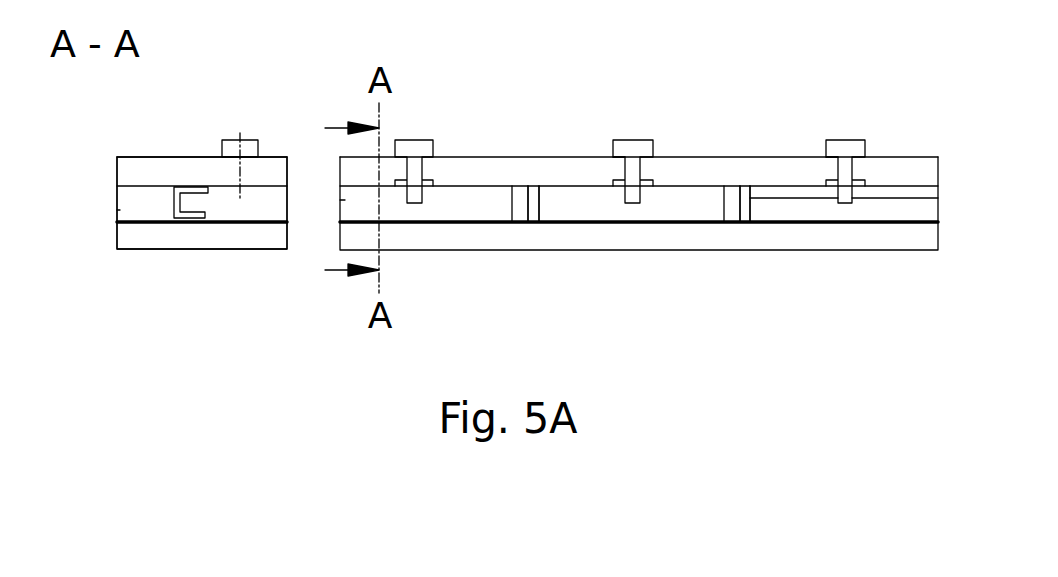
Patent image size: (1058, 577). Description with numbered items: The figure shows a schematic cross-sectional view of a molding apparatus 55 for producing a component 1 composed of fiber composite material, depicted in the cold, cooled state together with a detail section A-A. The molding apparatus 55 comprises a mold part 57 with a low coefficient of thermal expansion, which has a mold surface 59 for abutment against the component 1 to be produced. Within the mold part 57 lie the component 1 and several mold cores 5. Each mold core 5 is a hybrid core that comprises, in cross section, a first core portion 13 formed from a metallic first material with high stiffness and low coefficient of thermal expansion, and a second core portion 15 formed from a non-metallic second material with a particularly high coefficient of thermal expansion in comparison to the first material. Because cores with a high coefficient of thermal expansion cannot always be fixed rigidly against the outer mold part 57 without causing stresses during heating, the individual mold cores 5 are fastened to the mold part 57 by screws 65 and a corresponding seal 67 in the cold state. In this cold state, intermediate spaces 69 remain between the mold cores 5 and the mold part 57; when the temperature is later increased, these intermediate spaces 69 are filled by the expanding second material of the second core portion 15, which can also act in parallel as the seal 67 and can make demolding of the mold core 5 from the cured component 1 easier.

The component 1 is at (233, 217).
The mold core 5 is at (133, 193).
The first core portion 13 is at (148, 210).
The second core portion 15 is at (198, 220).
The molding apparatus 55 is at (502, 196).
The mold part 57 is at (152, 167).
The mold surface 59 is at (482, 183).
The screws 65 is at (228, 148).
The seal 67 is at (613, 157).
The intermediate spaces 69 is at (533, 193).